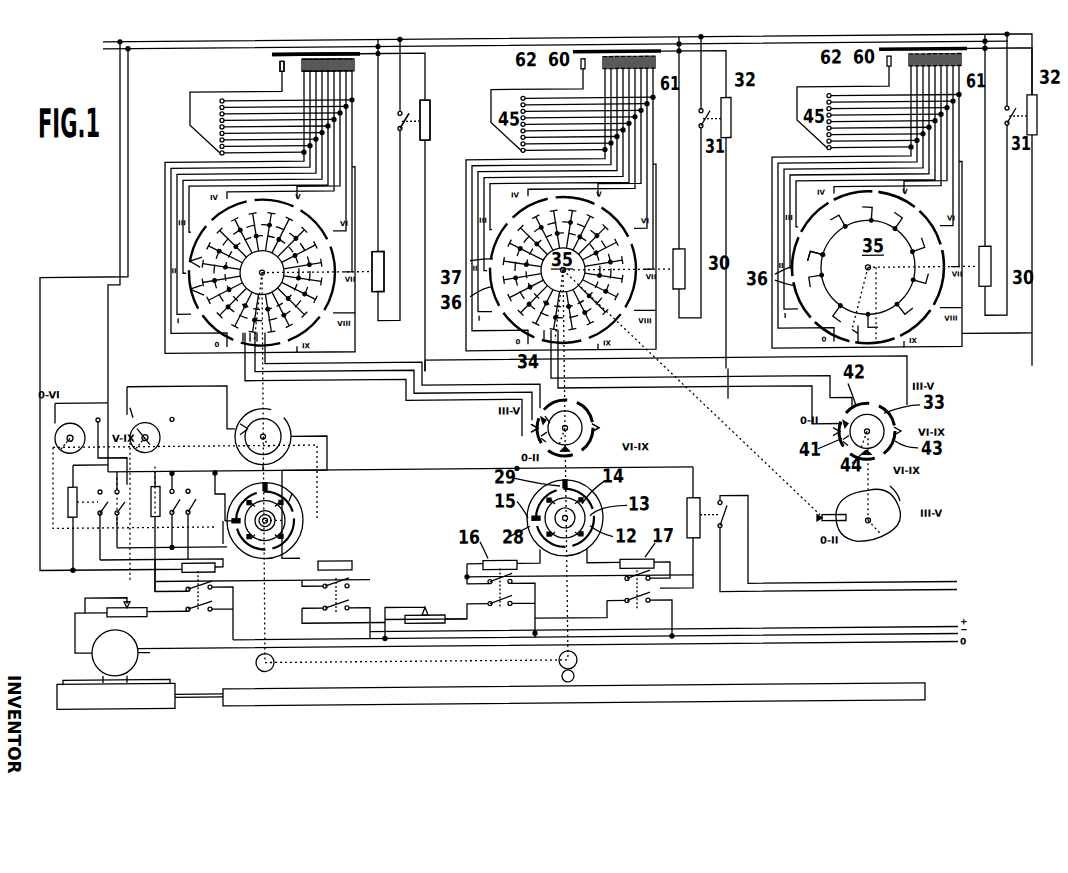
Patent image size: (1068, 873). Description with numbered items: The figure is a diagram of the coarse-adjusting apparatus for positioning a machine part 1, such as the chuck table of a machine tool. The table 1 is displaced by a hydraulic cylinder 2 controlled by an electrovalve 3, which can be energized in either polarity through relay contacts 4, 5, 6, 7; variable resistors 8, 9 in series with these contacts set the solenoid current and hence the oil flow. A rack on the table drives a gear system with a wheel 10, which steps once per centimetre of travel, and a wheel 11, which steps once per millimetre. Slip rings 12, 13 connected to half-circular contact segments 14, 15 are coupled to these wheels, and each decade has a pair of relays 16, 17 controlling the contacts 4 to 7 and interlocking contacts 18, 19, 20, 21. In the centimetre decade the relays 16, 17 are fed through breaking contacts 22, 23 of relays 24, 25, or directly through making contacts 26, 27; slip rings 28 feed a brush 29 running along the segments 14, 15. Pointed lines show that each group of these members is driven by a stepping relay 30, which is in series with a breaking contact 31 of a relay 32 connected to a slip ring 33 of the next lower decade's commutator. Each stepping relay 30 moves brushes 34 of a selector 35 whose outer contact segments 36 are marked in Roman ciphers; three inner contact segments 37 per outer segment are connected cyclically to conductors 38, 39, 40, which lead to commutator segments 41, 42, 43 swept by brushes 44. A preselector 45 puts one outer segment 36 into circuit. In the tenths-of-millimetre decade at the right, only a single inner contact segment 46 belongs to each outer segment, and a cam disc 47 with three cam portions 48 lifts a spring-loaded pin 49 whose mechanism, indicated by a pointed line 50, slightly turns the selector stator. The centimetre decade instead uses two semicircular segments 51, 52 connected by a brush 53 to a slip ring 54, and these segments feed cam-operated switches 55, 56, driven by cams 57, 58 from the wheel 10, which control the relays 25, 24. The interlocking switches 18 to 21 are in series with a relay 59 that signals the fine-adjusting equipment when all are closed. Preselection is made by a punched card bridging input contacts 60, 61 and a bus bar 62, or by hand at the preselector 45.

The machine part 1 is at (430, 698).
The hydraulic cylinder 2 is at (163, 697).
The electrovalve 3 is at (121, 663).
The relay contact 4 is at (210, 610).
The relay contact 5 is at (349, 610).
The relay contact 6 is at (512, 607).
The relay contact 7 is at (648, 605).
The variable resistor 8 is at (137, 617).
The variable resistor 9 is at (425, 618).
The wheel 10 is at (256, 664).
The wheel 11 is at (577, 664).
The slip rings 12 is at (290, 530).
The slip rings 13 is at (303, 523).
The half-circular contact segment 14 is at (280, 508).
The half-circular contact segment 15 is at (232, 525).
The relay 16 is at (185, 574).
The relay 17 is at (340, 563).
The interlocking contact 18 is at (210, 588).
The interlocking contact 19 is at (325, 588).
The interlocking contact 20 is at (490, 585).
The interlocking contact 21 is at (650, 583).
The breaking contact 22 is at (190, 510).
The breaking contact 23 is at (118, 513).
The relay 24 is at (152, 518).
The relay 25 is at (68, 520).
The making contact 26 is at (100, 515).
The making contact 27 is at (175, 490).
The slip rings 28 is at (296, 497).
The brush 29 is at (270, 495).
The stepping relay 30 is at (384, 274).
The breaking contact 31 is at (402, 131).
The relay 32 is at (428, 108).
The slip ring 33 is at (582, 415).
The brushes 34 is at (246, 340).
The selector 35 is at (274, 273).
The outer contact segment 36 is at (190, 290).
The inner contact segment 37 is at (190, 262).
The conductor 38 is at (318, 384).
The conductor 39 is at (345, 374).
The conductor 40 is at (380, 366).
The commutator segment 41 is at (537, 440).
The commutator segment 42 is at (575, 413).
The commutator segment 43 is at (600, 433).
The brushes 44 is at (572, 455).
The preselector 45 is at (220, 132).
The contact segment 46 is at (822, 262).
The cam disc 47 is at (880, 530).
The cam portion 48 is at (855, 500).
The spring-loaded pin 49 is at (830, 527).
The pointed line 50 is at (752, 465).
The semi-circular segment 51 is at (235, 436).
The semi-circular segment 52 is at (280, 422).
The contact 53 is at (270, 466).
The slip ring 54 is at (250, 428).
The cam-operated switch 55 is at (147, 423).
The cam-operated switch 56 is at (98, 418).
The cam 57 is at (155, 440).
The cam 58 is at (70, 423).
The relay 59 is at (697, 506).
The input contact 60 is at (280, 68).
The input contacts 61 is at (352, 66).
The bus bar 62 is at (272, 56).